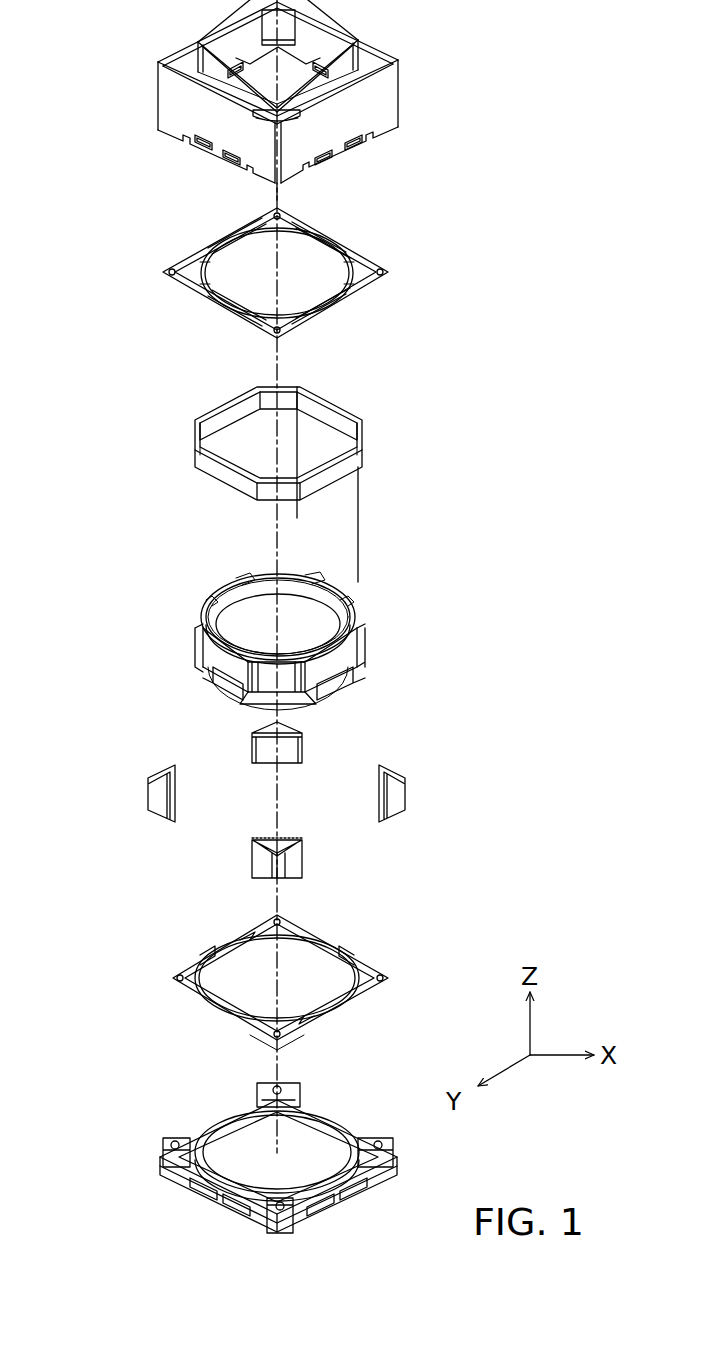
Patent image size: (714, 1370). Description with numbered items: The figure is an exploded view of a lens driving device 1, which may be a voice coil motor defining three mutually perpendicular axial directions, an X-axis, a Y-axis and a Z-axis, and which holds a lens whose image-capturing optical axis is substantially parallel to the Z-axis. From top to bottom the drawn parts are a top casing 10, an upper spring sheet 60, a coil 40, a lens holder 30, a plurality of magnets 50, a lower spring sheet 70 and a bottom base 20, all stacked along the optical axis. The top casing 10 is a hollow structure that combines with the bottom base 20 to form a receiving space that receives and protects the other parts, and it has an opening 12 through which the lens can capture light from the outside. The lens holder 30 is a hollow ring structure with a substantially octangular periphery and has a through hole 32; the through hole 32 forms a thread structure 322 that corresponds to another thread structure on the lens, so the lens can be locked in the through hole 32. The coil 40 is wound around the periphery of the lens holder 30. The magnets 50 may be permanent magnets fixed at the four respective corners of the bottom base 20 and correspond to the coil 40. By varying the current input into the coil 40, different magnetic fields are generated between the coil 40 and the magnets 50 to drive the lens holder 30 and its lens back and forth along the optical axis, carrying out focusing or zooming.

The lens driving device 1 is at (58, 23).
The top casing 10 is at (157, 89).
The opening 12 is at (207, 36).
The upper spring sheet 60 is at (168, 274).
The coil 40 is at (194, 455).
The lens holder 30 is at (194, 643).
The through hole 32 is at (247, 607).
The thread structure 322 is at (226, 602).
The magnets 50 is at (132, 794).
The lower spring sheet 70 is at (175, 983).
The bottom base 20 is at (159, 1163).